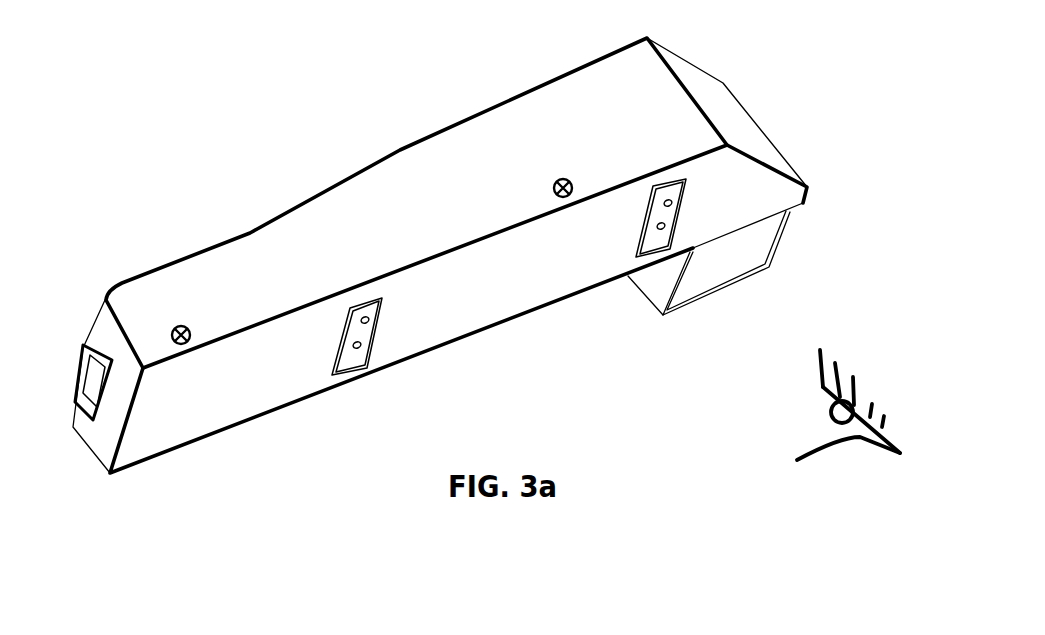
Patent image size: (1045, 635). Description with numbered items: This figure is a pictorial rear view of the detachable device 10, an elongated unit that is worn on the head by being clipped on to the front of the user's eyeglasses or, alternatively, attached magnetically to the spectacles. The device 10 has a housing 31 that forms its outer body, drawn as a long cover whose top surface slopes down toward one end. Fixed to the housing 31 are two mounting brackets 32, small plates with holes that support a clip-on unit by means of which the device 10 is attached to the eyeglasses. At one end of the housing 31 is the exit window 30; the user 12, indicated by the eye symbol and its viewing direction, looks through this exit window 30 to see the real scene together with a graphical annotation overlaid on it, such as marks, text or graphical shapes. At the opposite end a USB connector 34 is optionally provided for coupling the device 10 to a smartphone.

The device 10 is at (449, 276).
The user 12 is at (860, 437).
The exit window 30 is at (737, 258).
The housing 31 is at (397, 148).
The mounting brackets 32 is at (355, 358).
The USB connector 34 is at (80, 383).